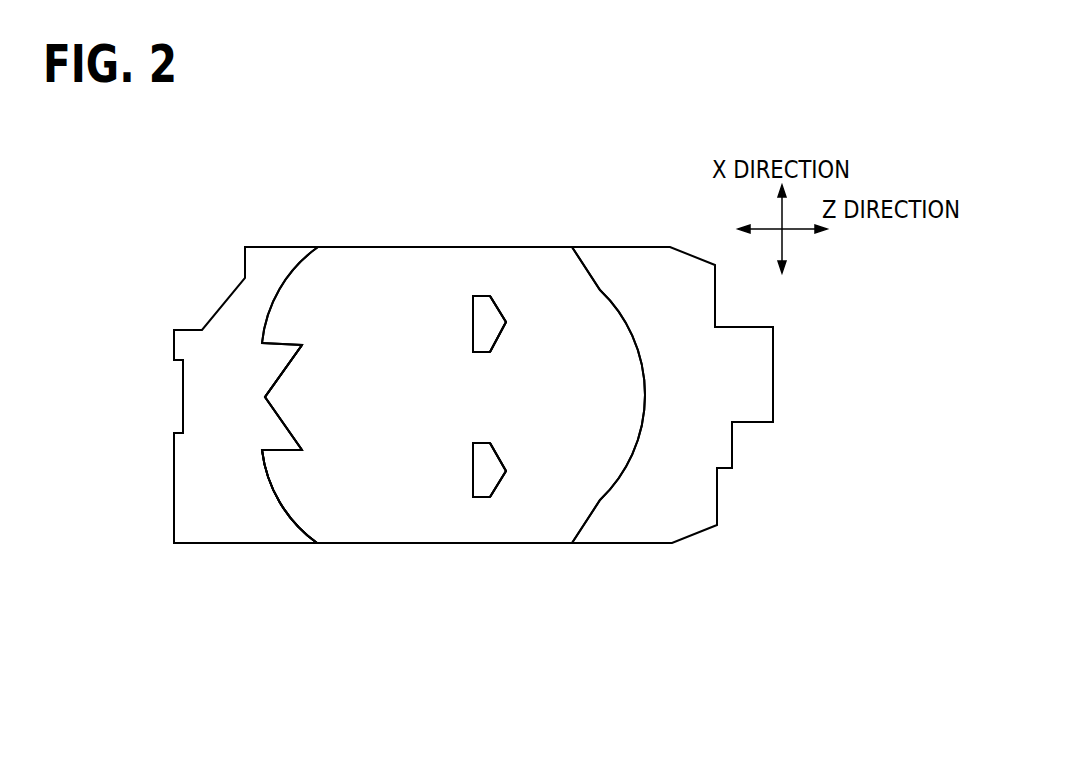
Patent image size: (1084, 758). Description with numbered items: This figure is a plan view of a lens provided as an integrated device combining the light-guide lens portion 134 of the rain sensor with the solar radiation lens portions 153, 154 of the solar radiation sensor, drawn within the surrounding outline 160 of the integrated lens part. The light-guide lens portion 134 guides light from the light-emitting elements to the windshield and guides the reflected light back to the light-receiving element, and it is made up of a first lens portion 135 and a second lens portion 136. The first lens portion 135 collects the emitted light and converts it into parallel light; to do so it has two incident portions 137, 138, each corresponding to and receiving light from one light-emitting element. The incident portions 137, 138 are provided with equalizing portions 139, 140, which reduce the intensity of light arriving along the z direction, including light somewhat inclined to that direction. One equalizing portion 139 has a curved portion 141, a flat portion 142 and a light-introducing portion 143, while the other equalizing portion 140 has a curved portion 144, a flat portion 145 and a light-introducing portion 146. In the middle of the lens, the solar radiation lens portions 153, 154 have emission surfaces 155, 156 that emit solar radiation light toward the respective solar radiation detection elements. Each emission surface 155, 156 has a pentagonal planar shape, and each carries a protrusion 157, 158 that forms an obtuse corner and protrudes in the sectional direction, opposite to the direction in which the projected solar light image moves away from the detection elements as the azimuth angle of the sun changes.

The light-guide lens portion 134 is at (362, 268).
The first lens portion 135 is at (320, 502).
The second lens portion 136 is at (565, 488).
The incident portion 137 is at (276, 297).
The incident portion 138 is at (300, 527).
The equalizing portion 139 is at (266, 369).
The equalizing portion 140 is at (268, 432).
The curved portion 141 is at (254, 252).
The flat portion 142 is at (263, 350).
The light-introducing portion 143 is at (276, 378).
The curved portion 144 is at (270, 494).
The flat portion 145 is at (269, 446).
The light-introducing portion 146 is at (265, 402).
The solar radiation lens portion 153 is at (480, 293).
The solar radiation lens portion 154 is at (480, 500).
The emission surface 155 is at (487, 317).
The emission surface 156 is at (490, 472).
The protrusion 157 is at (510, 313).
The protrusion 158 is at (506, 471).
The lens holder 160 is at (238, 272).